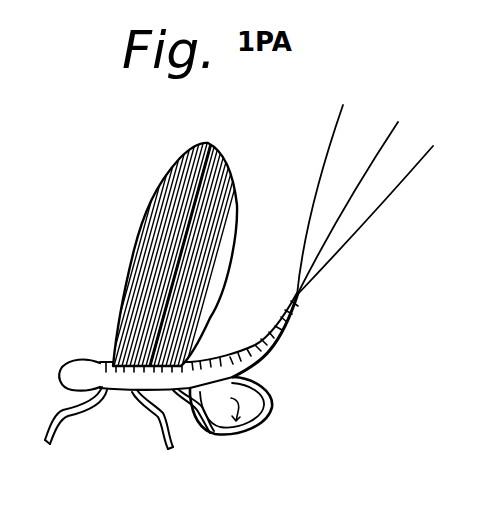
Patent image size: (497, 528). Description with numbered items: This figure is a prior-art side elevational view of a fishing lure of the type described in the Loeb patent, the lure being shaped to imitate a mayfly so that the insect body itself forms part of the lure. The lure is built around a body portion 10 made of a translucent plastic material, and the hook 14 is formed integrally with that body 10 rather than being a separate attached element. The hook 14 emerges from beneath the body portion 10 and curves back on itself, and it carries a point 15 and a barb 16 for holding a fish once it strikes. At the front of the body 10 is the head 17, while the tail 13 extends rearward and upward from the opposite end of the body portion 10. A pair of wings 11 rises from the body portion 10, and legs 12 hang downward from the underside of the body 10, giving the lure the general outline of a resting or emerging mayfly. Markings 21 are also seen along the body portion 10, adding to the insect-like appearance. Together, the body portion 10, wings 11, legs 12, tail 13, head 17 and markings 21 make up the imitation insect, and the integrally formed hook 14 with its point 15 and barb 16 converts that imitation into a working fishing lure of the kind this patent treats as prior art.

The body portion 10 is at (267, 352).
The wings 11 is at (235, 218).
The legs 12 is at (60, 422).
The tail 13 is at (372, 213).
The hook 14 is at (272, 405).
The point 15 is at (222, 434).
The barb 16 is at (222, 407).
The head 17 is at (62, 368).
The markings 21 is at (236, 350).